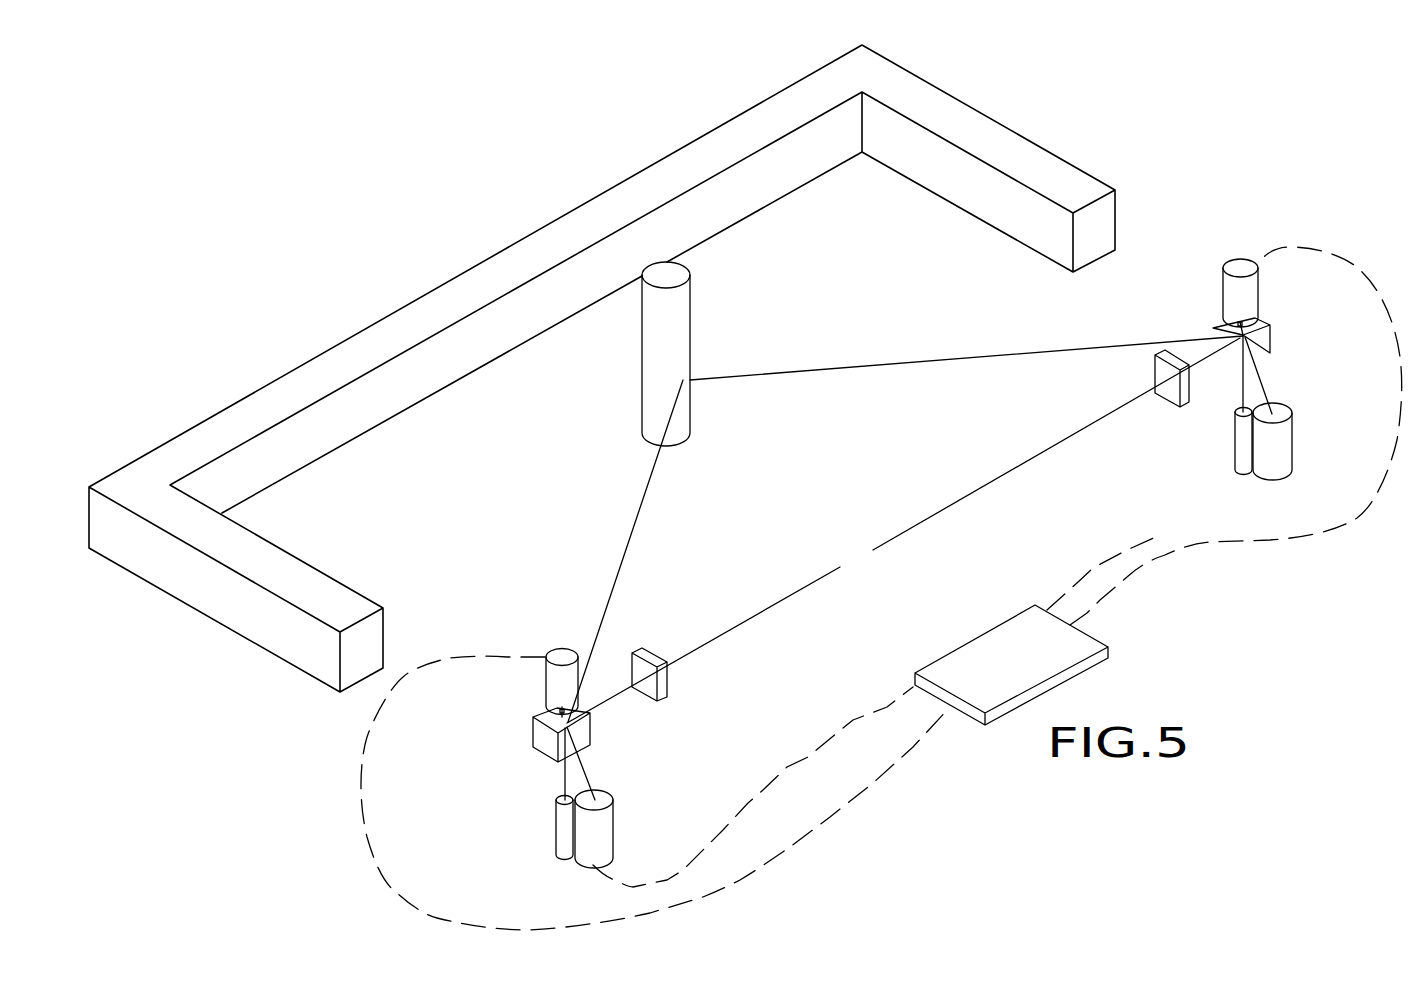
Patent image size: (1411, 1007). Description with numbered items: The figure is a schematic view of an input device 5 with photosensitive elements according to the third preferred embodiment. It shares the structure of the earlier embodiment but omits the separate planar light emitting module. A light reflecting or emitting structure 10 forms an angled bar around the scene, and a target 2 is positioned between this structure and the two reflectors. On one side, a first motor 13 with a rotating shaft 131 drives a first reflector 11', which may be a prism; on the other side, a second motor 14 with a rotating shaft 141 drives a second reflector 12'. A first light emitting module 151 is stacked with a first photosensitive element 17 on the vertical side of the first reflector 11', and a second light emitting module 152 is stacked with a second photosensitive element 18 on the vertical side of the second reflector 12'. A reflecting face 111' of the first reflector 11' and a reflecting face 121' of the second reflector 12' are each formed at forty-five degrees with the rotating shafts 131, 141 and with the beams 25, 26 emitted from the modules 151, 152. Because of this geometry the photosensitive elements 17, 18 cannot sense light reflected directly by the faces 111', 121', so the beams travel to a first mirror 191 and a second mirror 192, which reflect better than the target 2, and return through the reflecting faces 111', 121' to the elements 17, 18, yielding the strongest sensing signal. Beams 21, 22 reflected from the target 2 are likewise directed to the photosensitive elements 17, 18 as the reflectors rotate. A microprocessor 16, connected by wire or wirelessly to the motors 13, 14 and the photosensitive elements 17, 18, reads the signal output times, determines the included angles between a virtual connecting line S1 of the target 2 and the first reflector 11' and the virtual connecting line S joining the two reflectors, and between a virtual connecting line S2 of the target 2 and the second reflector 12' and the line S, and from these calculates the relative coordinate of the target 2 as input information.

The input device 5 is at (519, 173).
The light reflecting or emitting structure 10 is at (1085, 197).
The target 2 is at (684, 273).
The beam 21 is at (631, 527).
The beam 22 is at (827, 368).
The virtual connecting line S is at (903, 530).
The virtual connecting line S1 is at (572, 620).
The virtual connecting line S2 is at (886, 346).
The first motor 13 is at (550, 683).
The rotating shaft 131 is at (560, 712).
The first reflector 11' is at (534, 740).
The reflecting face 111' is at (611, 763).
The beam 25 is at (565, 782).
The first mirror 191 is at (664, 682).
The first light emitting module 151 is at (557, 822).
The first photosensitive element 17 is at (603, 832).
The second motor 14 is at (1249, 288).
The rotating shaft 141 is at (1226, 323).
The second reflector 12' is at (1281, 334).
The reflecting face 121' is at (1286, 375).
The beam 26 is at (1242, 380).
The second mirror 192 is at (1173, 396).
The second light emitting module 152 is at (1238, 433).
The second photosensitive element 18 is at (1287, 448).
The microprocessor 16 is at (996, 700).